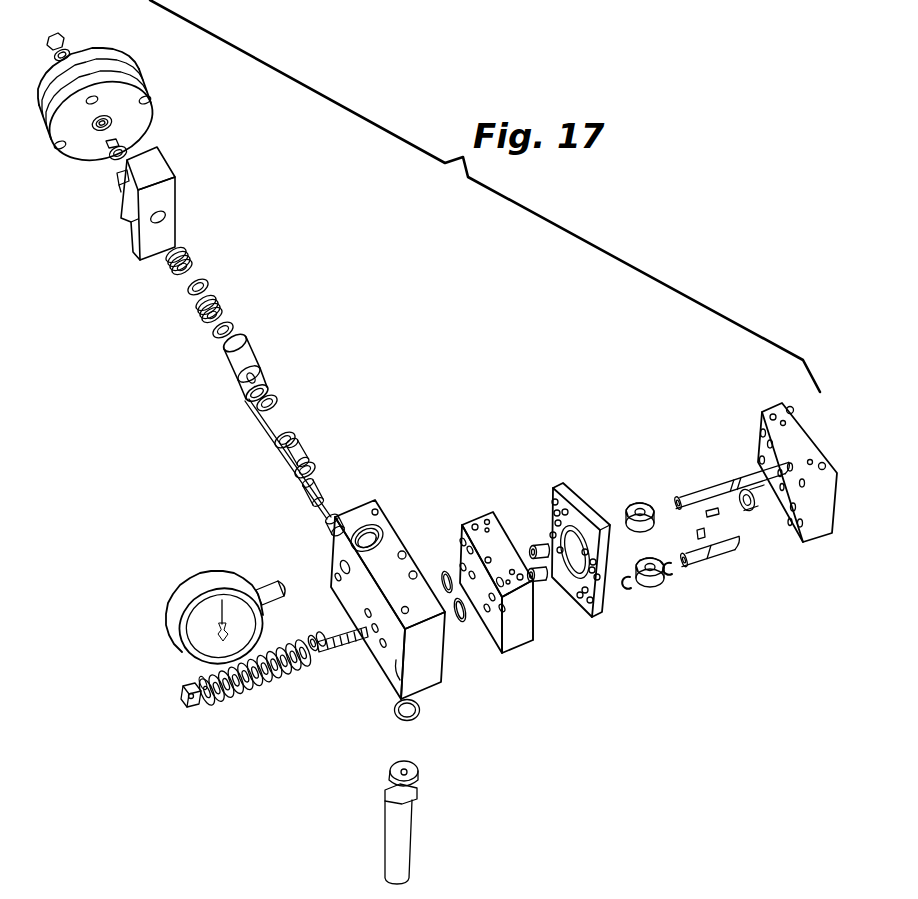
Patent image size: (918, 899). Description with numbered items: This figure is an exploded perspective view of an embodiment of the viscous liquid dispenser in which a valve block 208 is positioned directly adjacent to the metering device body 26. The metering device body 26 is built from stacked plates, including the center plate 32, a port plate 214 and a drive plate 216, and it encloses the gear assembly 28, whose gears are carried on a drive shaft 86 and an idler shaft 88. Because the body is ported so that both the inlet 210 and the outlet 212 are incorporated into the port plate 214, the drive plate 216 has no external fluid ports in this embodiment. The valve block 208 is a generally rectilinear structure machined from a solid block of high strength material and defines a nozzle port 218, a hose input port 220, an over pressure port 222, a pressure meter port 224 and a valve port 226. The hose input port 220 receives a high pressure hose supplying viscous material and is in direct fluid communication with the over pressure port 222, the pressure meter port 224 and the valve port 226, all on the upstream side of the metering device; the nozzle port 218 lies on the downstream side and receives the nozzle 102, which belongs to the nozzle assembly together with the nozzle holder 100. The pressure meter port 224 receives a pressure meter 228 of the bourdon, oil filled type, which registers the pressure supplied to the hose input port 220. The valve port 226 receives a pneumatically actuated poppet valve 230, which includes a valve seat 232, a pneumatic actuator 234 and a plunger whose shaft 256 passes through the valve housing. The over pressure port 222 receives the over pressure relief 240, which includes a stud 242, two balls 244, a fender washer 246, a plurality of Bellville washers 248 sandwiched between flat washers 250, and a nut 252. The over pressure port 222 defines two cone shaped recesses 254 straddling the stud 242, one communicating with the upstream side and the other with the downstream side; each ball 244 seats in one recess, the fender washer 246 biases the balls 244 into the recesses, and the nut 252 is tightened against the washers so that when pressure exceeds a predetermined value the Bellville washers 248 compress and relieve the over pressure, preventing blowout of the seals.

The pneumatic actuator 234 is at (140, 113).
The valve seat 232 is at (252, 348).
The poppet valve 230 is at (263, 373).
The shaft 256 is at (303, 450).
The valve port 226 is at (338, 545).
The cone shaped recesses 254 is at (350, 637).
The stud 242 is at (338, 632).
The balls 244 is at (318, 638).
The fender washer 246 is at (213, 670).
The pressure meter 228 is at (189, 623).
The Bellville washers 248 is at (187, 648).
The flat washers 250 is at (203, 681).
The nut 252 is at (185, 693).
The over pressure relief 240 is at (233, 624).
The over pressure port 222 is at (375, 632).
The nozzle port 218 is at (390, 657).
The hose input port 220 is at (360, 522).
The valve block 208 is at (412, 585).
The pressure meter port 224 is at (392, 547).
The inlet 210 is at (530, 599).
The outlet 212 is at (478, 630).
The metering device body 26 is at (517, 650).
The port plate 214 is at (533, 640).
The center plate 32 is at (565, 485).
The gear assembly 28 is at (635, 560).
The drive shaft 86 is at (727, 480).
The idler shaft 88 is at (710, 553).
The drive plate 216 is at (807, 543).
The nozzle holder 100 is at (418, 772).
The nozzle 102 is at (407, 833).